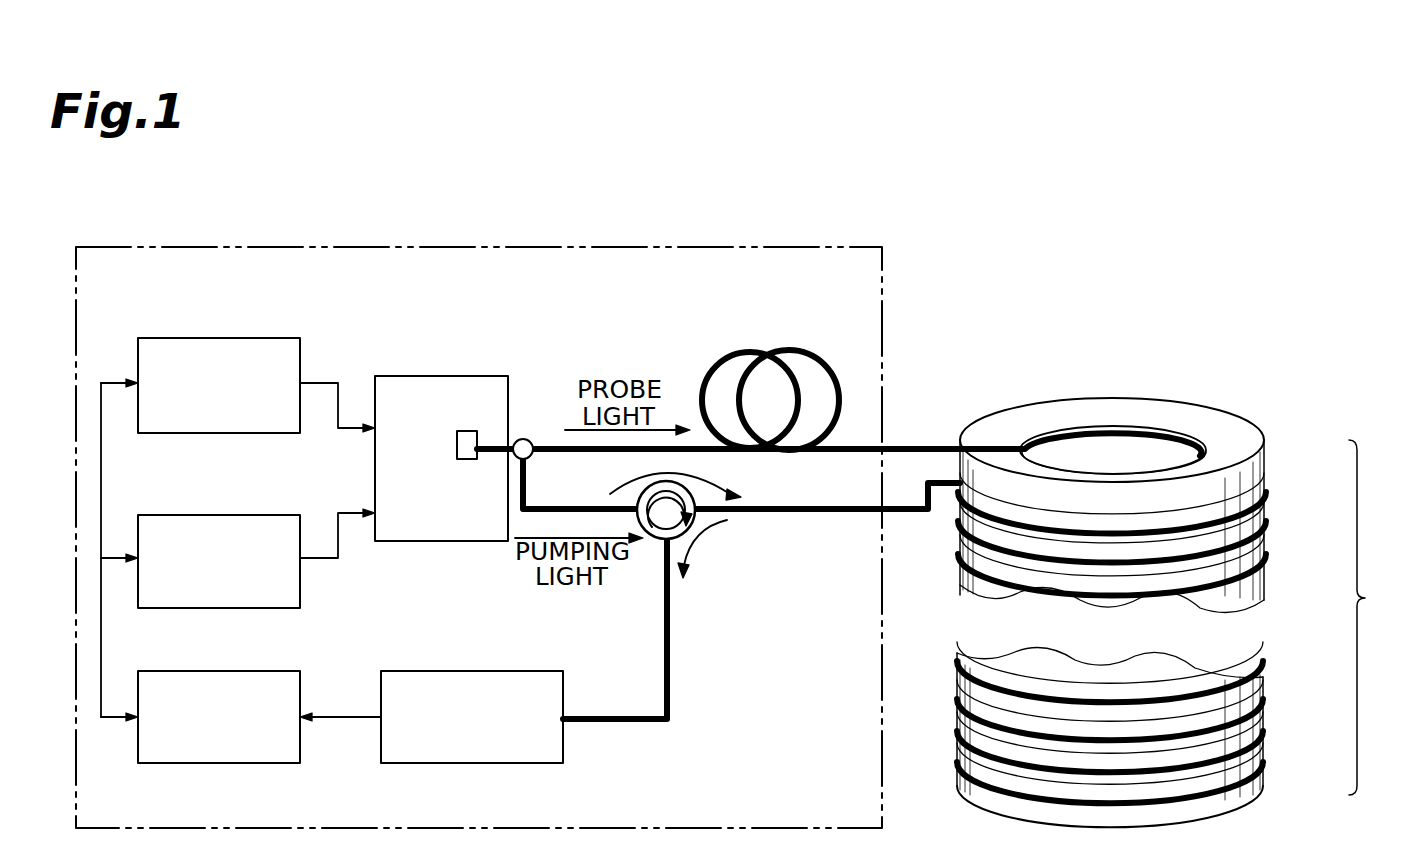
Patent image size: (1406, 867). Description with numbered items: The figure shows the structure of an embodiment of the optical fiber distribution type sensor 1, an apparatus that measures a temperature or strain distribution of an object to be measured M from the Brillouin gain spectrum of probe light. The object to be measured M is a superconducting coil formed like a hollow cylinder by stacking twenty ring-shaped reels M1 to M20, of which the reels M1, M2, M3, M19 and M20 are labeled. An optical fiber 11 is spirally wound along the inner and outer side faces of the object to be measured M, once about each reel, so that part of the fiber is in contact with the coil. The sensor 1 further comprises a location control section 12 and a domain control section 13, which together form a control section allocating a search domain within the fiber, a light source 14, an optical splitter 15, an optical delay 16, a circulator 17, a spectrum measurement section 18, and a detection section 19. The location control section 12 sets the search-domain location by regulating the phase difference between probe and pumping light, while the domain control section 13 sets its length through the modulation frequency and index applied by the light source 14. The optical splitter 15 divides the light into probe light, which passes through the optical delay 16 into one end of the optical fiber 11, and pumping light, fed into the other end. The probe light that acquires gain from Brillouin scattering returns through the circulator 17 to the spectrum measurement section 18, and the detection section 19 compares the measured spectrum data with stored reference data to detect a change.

The optical fiber distribution type sensor 1 is at (1250, 294).
The optical fiber 11 is at (1110, 438).
The location control section 12 is at (250, 515).
The domain control section 13 is at (250, 338).
The light source 14 is at (492, 376).
The optical splitter 15 is at (528, 439).
The optical delay 16 is at (832, 372).
The circulator 17 is at (655, 540).
The spectrum measurement section 18 is at (530, 671).
The detection section 19 is at (250, 671).
The reel M1 is at (1255, 490).
The reel M2 is at (1255, 525).
The reel M3 is at (1255, 556).
The reel M19 is at (1255, 729).
The reel M20 is at (1255, 761).
The object to be measured M is at (1369, 617).